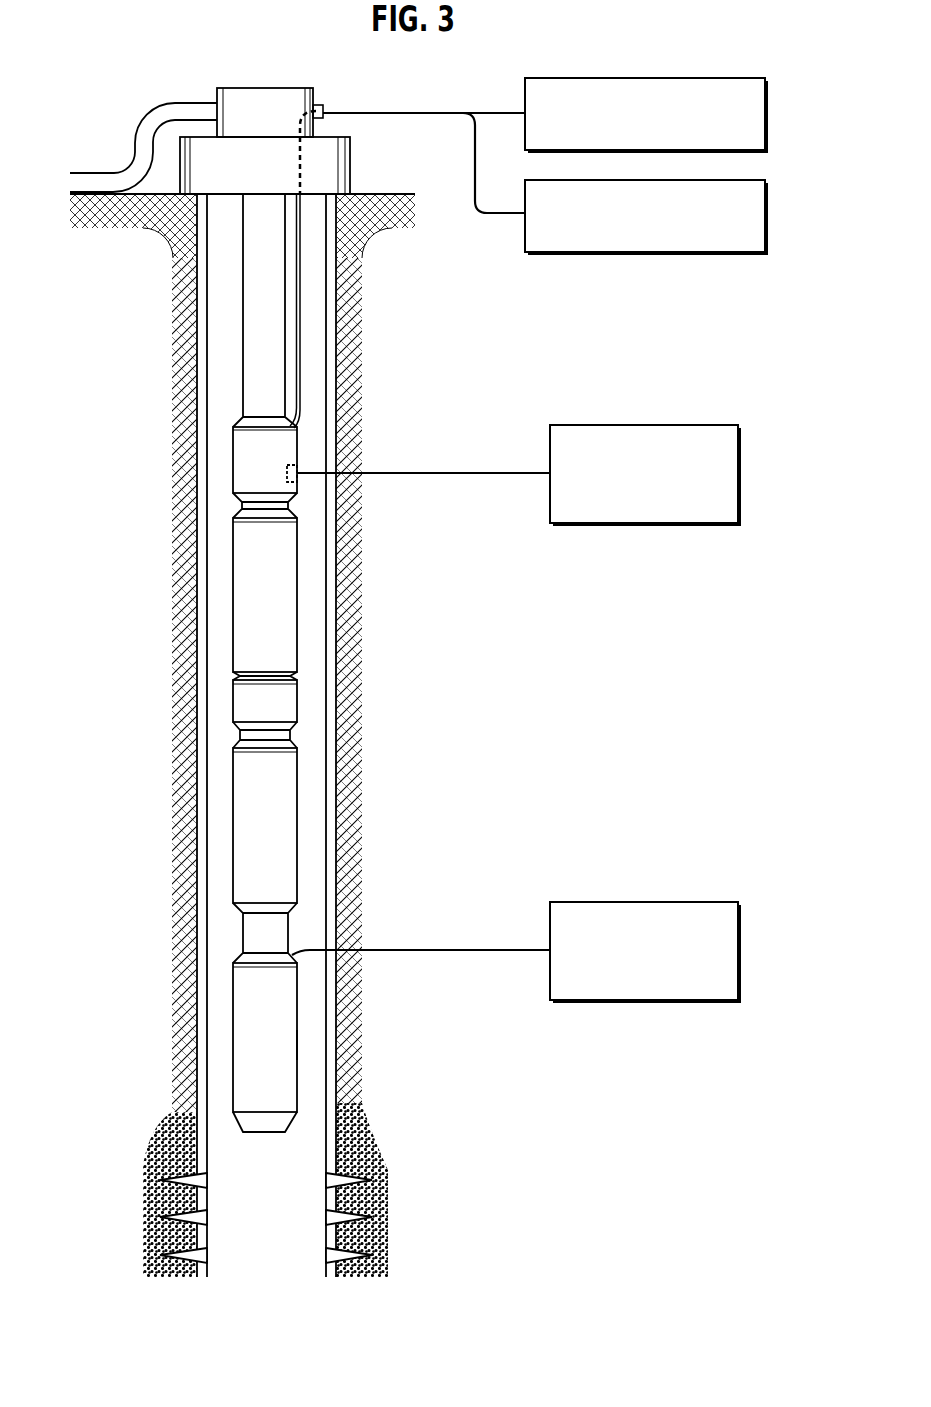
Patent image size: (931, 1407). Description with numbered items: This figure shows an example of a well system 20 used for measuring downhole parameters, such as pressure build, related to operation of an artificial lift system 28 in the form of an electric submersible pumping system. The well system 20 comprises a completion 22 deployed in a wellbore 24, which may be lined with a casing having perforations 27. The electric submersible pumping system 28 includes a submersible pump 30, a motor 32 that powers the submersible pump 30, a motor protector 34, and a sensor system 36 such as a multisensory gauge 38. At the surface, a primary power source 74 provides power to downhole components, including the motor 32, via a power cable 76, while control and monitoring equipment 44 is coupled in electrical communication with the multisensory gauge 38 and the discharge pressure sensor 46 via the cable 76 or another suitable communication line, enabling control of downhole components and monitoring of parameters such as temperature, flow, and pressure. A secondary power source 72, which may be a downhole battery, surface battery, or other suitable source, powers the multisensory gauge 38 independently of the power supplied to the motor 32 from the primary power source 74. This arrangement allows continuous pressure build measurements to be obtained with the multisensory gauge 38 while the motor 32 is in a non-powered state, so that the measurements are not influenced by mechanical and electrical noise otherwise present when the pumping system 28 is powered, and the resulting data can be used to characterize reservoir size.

The well system 20 is at (196, 80).
The completion 22 is at (184, 394).
The wellbore 24 is at (223, 338).
The perforations 27 is at (372, 1215).
The artificial lift system 28 is at (157, 1127).
The submersible pump 30 is at (252, 602).
The motor 32 is at (252, 832).
The motor protector 34 is at (252, 717).
The sensor system 36 is at (313, 1046).
The multisensory gauge 38 is at (252, 1039).
The control and monitoring equipment 44 is at (765, 218).
The discharge pressure sensor 46 is at (738, 462).
The secondary power source 72 is at (738, 948).
The primary power source 74 is at (765, 108).
The power cable 76 is at (300, 357).